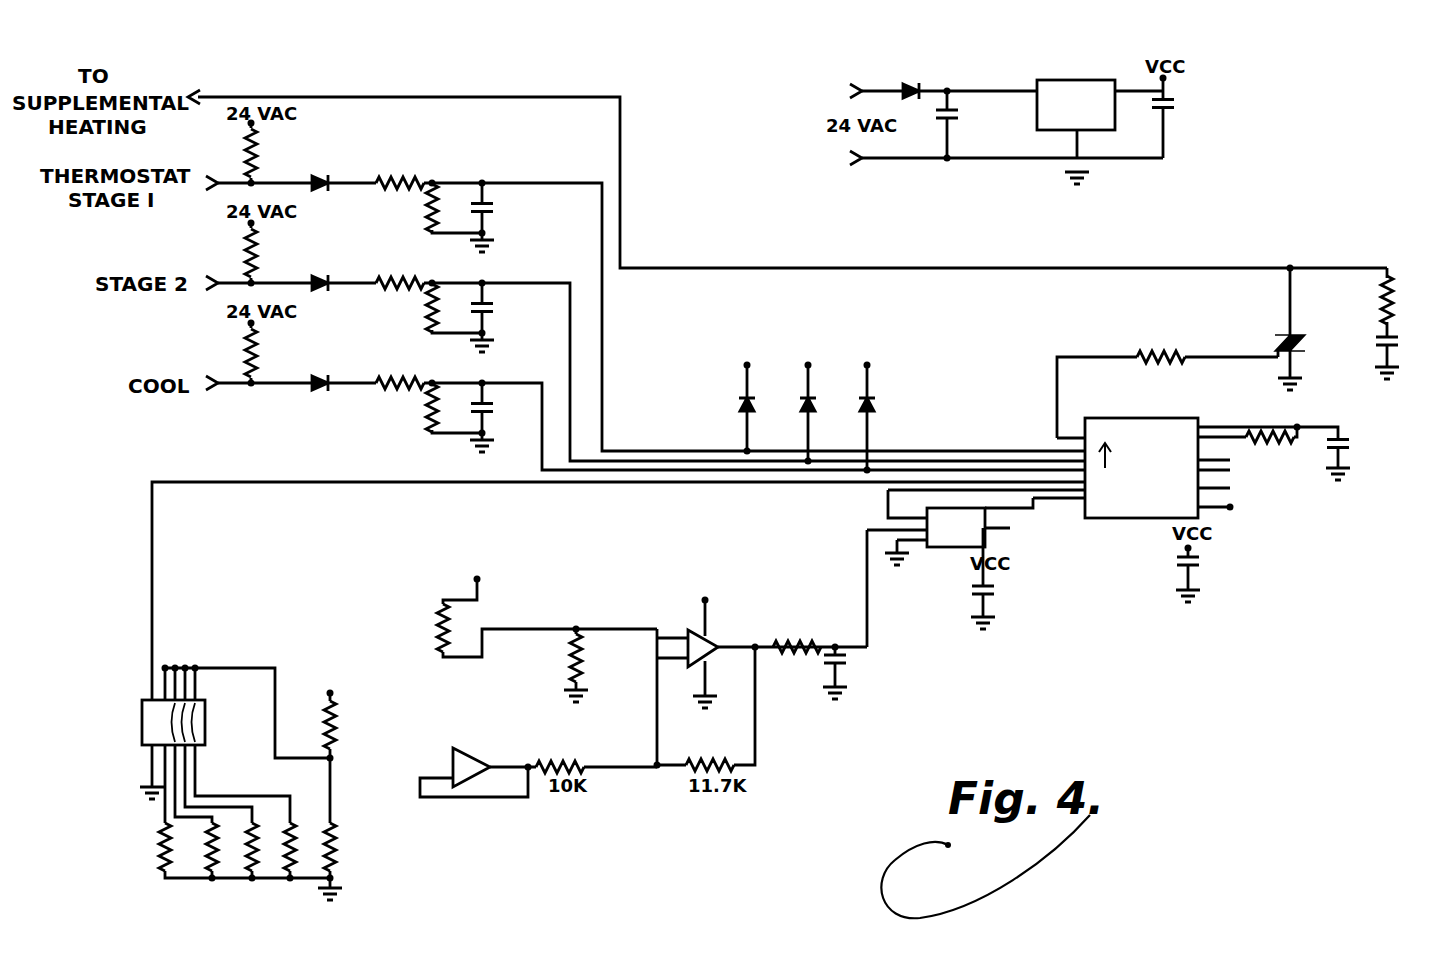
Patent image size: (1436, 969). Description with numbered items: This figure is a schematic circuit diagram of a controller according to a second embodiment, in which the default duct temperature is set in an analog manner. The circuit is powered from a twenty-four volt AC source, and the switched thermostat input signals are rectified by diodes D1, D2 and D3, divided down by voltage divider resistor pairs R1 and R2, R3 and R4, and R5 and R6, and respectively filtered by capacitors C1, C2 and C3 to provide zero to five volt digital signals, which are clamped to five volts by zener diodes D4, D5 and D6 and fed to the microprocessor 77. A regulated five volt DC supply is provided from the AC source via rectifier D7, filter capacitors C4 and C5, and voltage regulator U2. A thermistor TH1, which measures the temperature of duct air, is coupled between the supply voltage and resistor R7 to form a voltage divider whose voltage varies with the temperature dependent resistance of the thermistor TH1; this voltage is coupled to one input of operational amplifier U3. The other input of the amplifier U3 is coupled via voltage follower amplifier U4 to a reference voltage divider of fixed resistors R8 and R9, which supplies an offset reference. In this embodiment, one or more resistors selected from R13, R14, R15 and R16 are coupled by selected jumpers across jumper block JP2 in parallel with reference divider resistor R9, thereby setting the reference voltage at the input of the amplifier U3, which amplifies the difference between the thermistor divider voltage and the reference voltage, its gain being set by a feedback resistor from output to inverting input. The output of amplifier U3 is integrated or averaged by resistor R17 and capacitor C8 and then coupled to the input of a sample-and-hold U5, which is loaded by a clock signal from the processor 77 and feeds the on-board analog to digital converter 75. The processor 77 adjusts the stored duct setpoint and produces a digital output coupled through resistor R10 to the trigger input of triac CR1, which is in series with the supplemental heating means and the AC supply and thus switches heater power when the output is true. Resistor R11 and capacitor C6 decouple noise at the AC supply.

The diode D1 is at (322, 172).
The diode D2 is at (322, 272).
The diode D3 is at (322, 372).
The zener diode D4 is at (756, 399).
The zener diode D5 is at (817, 404).
The zener diode D6 is at (876, 408).
The rectifier D7 is at (913, 79).
The voltage divider resistor R1 is at (400, 171).
The voltage divider resistor R2 is at (440, 208).
The voltage divider resistor R3 is at (400, 271).
The voltage divider resistor R4 is at (440, 308).
The voltage divider resistor R5 is at (400, 371).
The voltage divider resistor R6 is at (440, 408).
The resistor R7 is at (589, 664).
The reference voltage divider resistor R8 is at (340, 714).
The reference voltage divider resistor R9 is at (342, 829).
The resistor R10 is at (1167, 383).
The resistor R11 is at (1408, 302).
The resistor R13 is at (187, 847).
The resistor R14 is at (232, 847).
The resistor R15 is at (271, 847).
The resistor R16 is at (310, 847).
The resistor R17 is at (797, 633).
The filter capacitor C1 is at (495, 217).
The filter capacitor C2 is at (495, 317).
The filter capacitor C3 is at (495, 417).
The filter capacitor C4 is at (960, 125).
The filter capacitor C5 is at (1177, 115).
The capacitor C6 is at (1400, 358).
The capacitor C8 is at (848, 672).
The voltage regulator U2 is at (1052, 122).
The operational amplifier U3 is at (698, 670).
The voltage follower amplifier U4 is at (538, 763).
The sample-and-hold U5 is at (962, 548).
The thermistor TH1 is at (529, 606).
The jumper block JP2 is at (205, 722).
The triac CR1 is at (1306, 329).
The analog to digital converter 75 is at (1135, 519).
The microprocessor 77 is at (1158, 506).